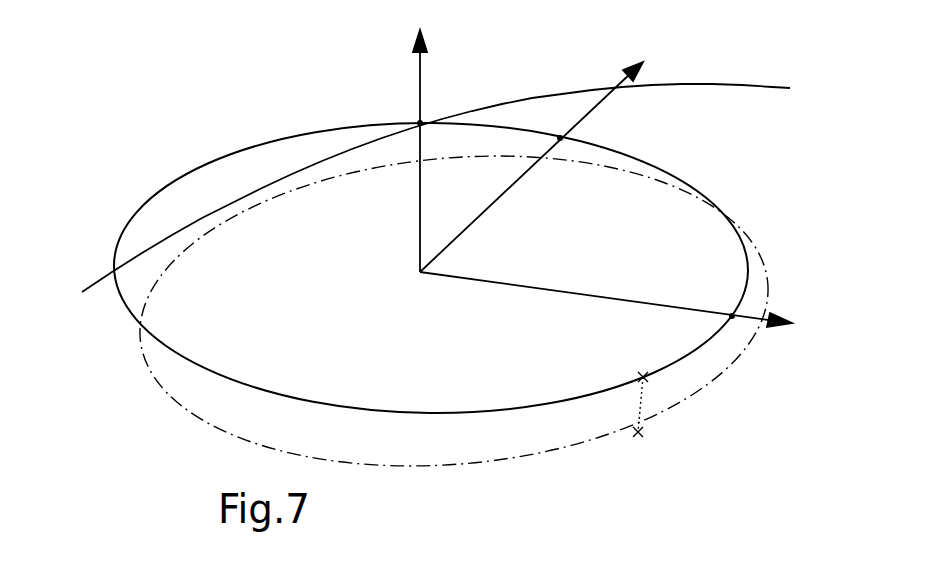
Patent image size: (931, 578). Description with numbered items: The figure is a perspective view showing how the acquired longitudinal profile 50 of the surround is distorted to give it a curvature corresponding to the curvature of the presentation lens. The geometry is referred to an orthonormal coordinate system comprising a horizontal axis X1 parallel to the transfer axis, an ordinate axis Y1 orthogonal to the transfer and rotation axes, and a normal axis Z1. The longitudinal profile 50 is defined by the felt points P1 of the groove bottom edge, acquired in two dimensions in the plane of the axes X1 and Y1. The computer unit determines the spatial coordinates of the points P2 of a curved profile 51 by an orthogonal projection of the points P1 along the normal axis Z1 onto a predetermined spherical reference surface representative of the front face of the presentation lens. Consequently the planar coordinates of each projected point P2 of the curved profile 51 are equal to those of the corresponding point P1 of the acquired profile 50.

The first longitudinal profile 50 is at (633, 157).
The curved profile 51 is at (755, 290).
The normal axis Z1 is at (400, 151).
The ordinate axis Y1 is at (531, 156).
The horizontal axis X1 is at (613, 324).
The felt points P1 is at (645, 354).
The projected points P2 is at (645, 430).